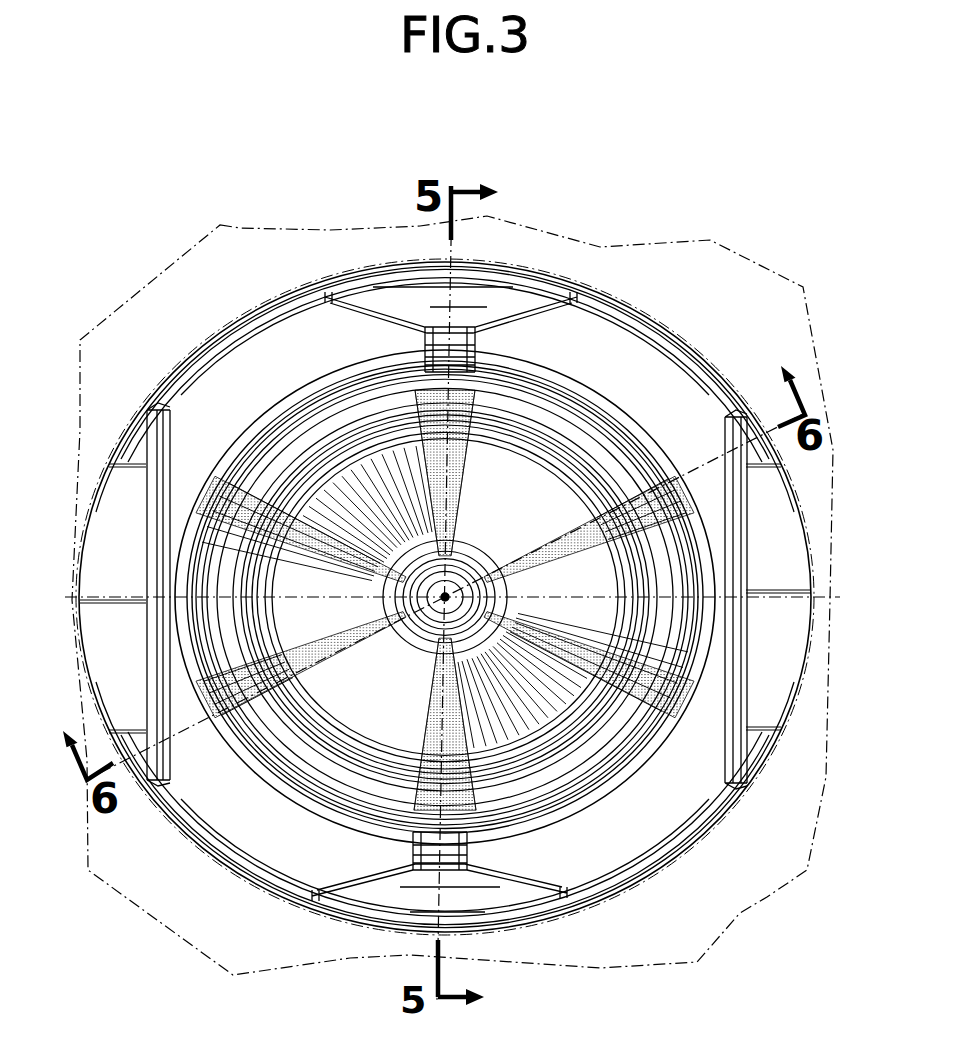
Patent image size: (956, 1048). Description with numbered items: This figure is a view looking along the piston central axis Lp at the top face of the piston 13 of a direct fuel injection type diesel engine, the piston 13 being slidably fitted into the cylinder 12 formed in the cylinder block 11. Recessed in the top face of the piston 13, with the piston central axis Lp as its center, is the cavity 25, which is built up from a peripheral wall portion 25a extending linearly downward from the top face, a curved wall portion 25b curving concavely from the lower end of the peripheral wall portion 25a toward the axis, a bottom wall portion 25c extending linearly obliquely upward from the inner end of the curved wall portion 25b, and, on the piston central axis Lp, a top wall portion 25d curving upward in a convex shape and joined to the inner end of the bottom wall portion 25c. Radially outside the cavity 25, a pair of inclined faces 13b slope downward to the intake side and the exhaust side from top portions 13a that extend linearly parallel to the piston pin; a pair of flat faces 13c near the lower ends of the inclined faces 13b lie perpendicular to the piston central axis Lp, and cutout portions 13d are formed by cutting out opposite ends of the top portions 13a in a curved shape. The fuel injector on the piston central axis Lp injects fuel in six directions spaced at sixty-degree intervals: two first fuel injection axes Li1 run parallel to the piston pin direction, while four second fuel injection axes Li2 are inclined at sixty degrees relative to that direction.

The cylinder block 11 is at (622, 240).
The cylinder 12 is at (625, 314).
The piston 13 is at (680, 335).
The top portions 13a is at (463, 342).
The inclined faces 13b is at (268, 350).
The flat faces 13c is at (120, 487).
The cutout portions 13d is at (472, 285).
The cavity 25 is at (543, 514).
The peripheral wall portion 25a is at (413, 388).
The curved wall portion 25b is at (295, 440).
The bottom wall portion 25c is at (335, 717).
The top wall portion 25d is at (428, 630).
The first fuel injection axes Li1 is at (462, 455).
The second fuel injection axes Li2 is at (340, 545).
The piston central axis Lp is at (447, 597).